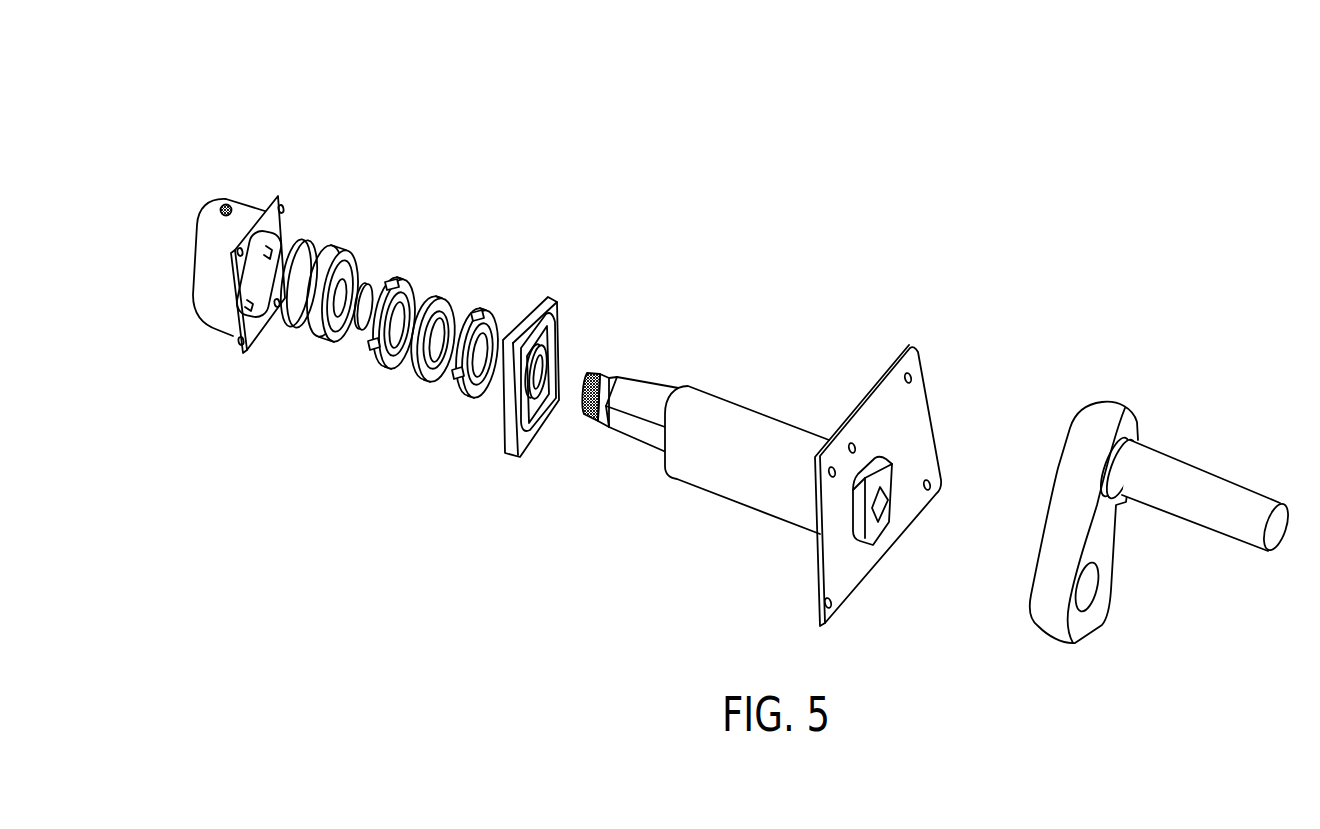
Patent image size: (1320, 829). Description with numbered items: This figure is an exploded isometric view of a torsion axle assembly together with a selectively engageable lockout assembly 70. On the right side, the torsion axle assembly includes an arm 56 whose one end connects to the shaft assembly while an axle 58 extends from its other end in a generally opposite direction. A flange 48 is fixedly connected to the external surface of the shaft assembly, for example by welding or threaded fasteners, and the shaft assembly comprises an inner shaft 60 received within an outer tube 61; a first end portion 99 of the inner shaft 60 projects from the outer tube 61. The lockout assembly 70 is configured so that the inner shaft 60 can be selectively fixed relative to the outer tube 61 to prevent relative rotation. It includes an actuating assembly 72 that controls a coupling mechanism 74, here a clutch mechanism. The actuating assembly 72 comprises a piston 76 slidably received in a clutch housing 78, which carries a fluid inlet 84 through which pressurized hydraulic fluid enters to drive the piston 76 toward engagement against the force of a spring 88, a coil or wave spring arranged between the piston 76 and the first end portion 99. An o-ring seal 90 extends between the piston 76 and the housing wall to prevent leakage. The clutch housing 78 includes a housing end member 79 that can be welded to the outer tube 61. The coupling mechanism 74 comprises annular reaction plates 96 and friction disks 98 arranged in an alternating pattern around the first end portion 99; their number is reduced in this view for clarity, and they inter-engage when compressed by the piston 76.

The flange 48 is at (917, 385).
The arm 56 is at (1097, 544).
The axle 58 is at (1217, 487).
The inner shaft 60 is at (640, 437).
The outer tube 61 is at (740, 487).
The lockout assembly 70 is at (468, 147).
The actuating assembly 72 is at (295, 400).
The coupling mechanism 74 is at (458, 246).
The piston 76 is at (323, 337).
The clutch housing 78 is at (208, 307).
The housing end member 79 is at (523, 450).
The fluid inlet 84 is at (228, 205).
The spring 88 is at (367, 284).
The o-ring seal 90 is at (305, 242).
The reaction plates 96 is at (390, 360).
The friction disks 98 is at (437, 296).
The first end portion 99 is at (597, 371).